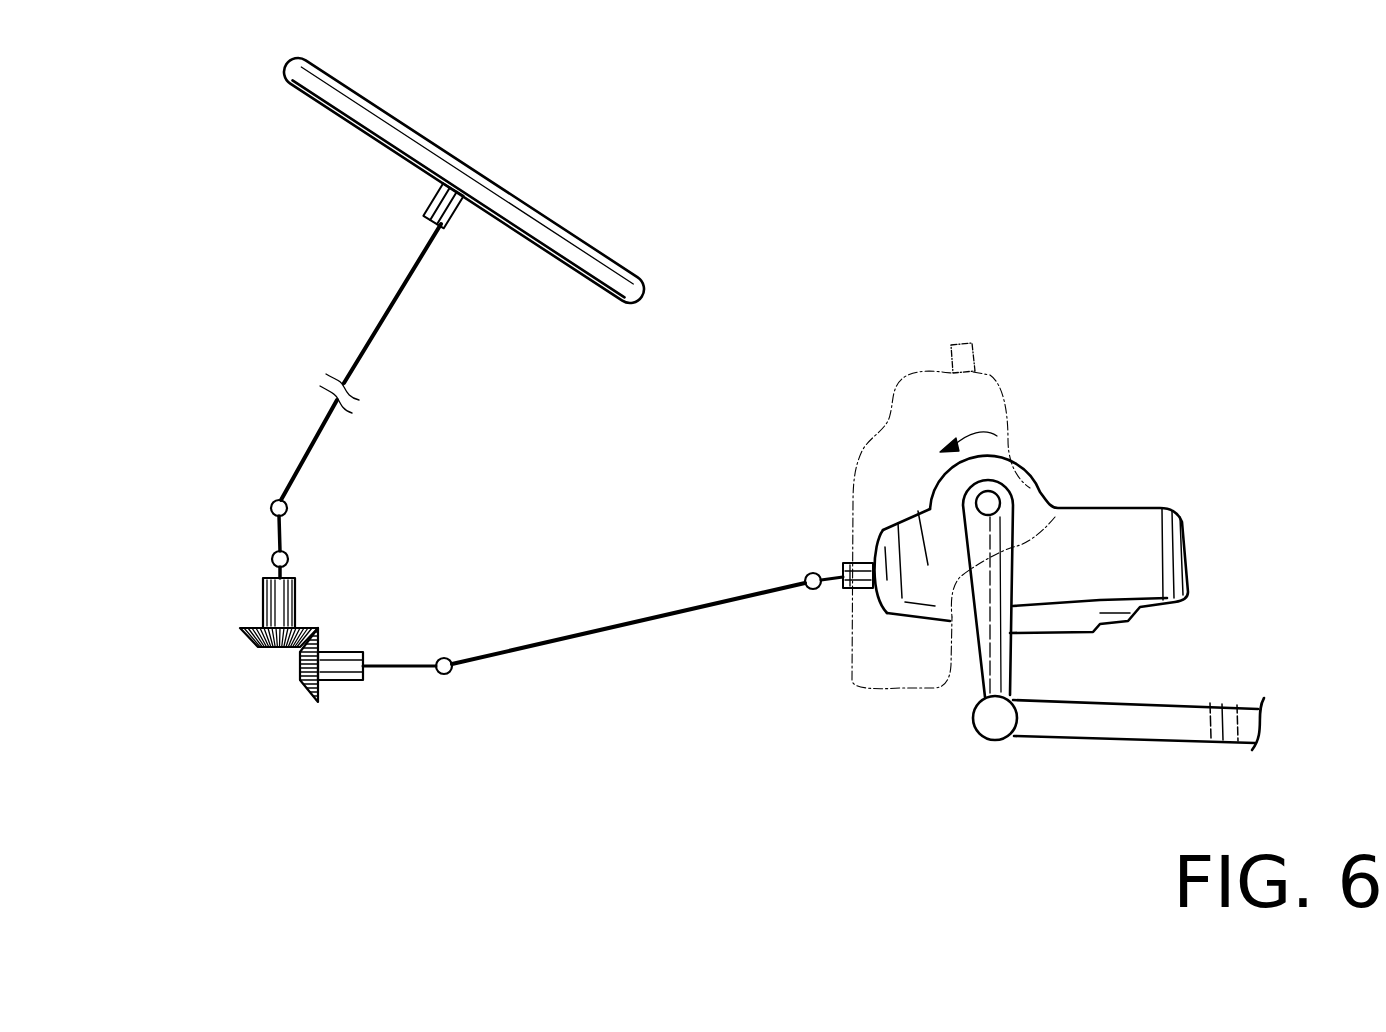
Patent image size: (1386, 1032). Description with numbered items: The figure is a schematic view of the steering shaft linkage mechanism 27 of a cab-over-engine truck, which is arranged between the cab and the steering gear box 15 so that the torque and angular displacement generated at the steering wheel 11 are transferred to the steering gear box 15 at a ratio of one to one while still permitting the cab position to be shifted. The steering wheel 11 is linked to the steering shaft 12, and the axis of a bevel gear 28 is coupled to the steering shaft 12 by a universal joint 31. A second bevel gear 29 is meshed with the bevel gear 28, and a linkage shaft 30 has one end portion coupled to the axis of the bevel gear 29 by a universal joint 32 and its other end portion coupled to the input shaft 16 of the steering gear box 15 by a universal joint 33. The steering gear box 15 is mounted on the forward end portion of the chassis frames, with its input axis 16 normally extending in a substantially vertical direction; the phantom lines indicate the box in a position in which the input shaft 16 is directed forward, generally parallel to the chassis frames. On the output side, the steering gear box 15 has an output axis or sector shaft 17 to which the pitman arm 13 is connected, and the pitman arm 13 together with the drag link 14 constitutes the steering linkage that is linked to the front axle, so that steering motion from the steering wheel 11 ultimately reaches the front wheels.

The steering wheel 11 is at (560, 222).
The steering shaft 12 is at (390, 300).
The pitman arm 13 is at (1000, 672).
The drag link 14 is at (1088, 742).
The steering gear box 15 is at (1183, 520).
The input axis 16 is at (855, 589).
The sector shaft 17 is at (992, 503).
The steering shaft linkage mechanism 27 is at (396, 648).
The bevel gear 28 is at (253, 641).
The bevel gear 29 is at (306, 702).
The linkage shaft 30 is at (588, 634).
The universal joint 31 is at (272, 559).
The universal joint 32 is at (446, 675).
The universal joint 33 is at (807, 577).